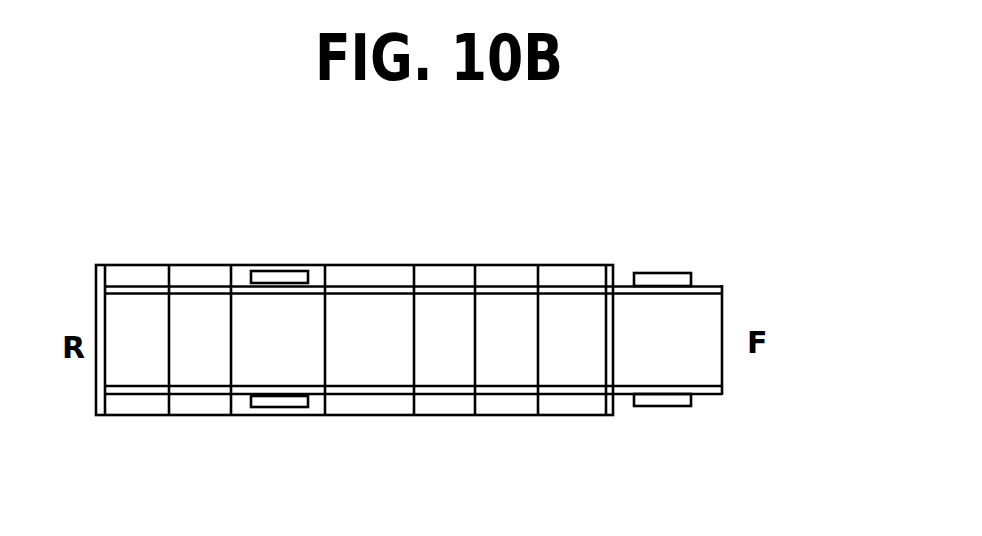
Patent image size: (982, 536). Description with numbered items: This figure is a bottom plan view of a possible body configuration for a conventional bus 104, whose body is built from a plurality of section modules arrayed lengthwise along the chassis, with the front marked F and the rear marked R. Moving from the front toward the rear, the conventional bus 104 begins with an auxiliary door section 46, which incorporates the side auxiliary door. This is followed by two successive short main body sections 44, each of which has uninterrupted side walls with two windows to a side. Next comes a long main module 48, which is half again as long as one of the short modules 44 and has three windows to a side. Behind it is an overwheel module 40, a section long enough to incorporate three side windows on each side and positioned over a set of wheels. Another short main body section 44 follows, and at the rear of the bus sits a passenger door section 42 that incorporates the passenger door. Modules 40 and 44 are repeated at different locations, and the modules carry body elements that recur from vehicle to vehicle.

The over wheel module 40 is at (316, 276).
The long main body module 48 is at (382, 277).
The auxiliary door module 46 is at (570, 278).
The passenger door module 42 is at (132, 407).
The short main body module 44 is at (203, 407).
The conventional bus 104 is at (728, 415).